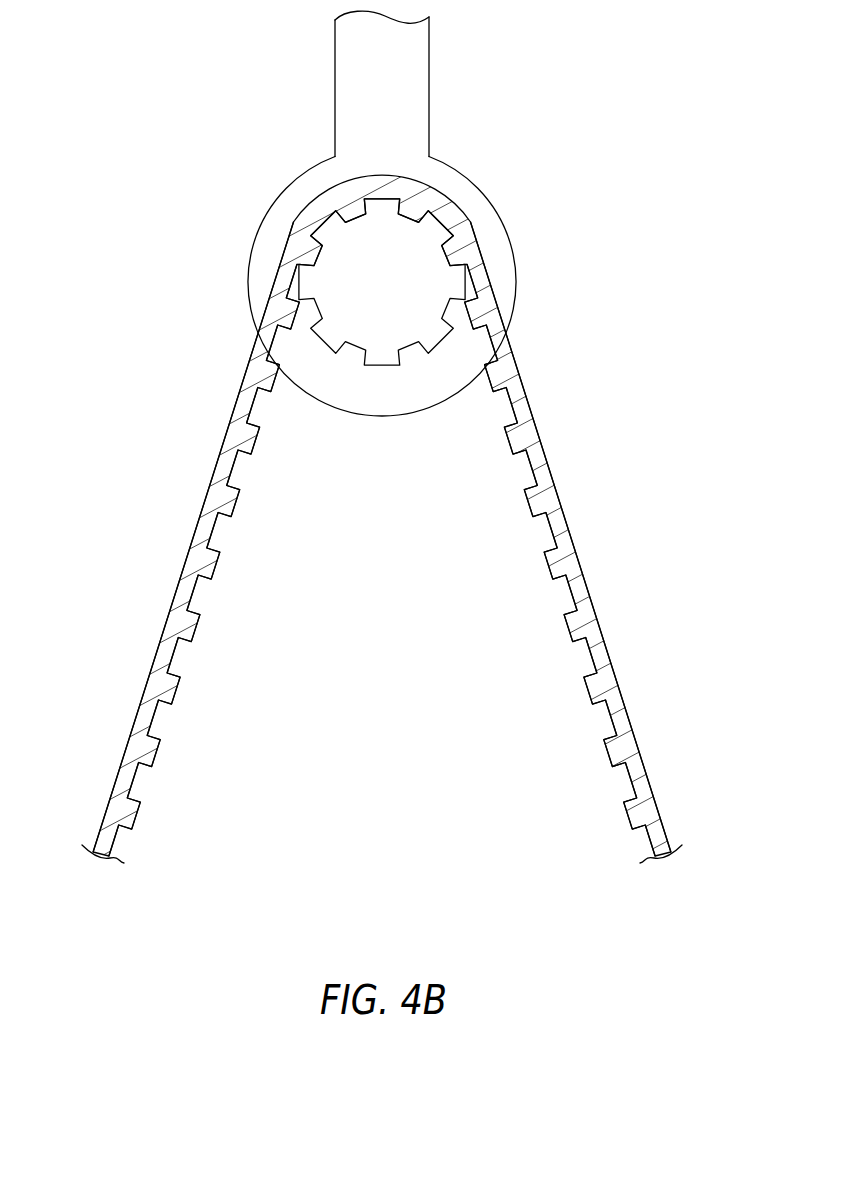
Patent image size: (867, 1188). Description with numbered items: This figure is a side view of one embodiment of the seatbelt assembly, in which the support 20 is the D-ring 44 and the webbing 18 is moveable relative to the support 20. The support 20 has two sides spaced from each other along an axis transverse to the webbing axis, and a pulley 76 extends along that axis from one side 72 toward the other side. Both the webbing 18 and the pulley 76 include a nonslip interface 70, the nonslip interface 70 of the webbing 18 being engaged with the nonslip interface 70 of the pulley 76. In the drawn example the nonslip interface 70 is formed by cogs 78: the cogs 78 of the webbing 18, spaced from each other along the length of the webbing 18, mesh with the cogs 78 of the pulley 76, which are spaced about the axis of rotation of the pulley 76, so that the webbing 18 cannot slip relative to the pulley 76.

The webbing 18 is at (542, 430).
The support 20 is at (437, 87).
The D-ring 44 is at (431, 48).
The nonslip interface 70 is at (311, 361).
The side 72 is at (488, 193).
The pulley 76 is at (347, 358).
The cogs 78 is at (442, 343).